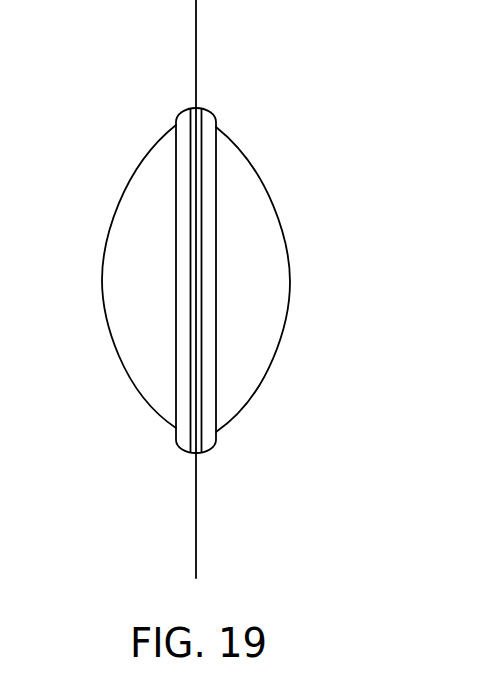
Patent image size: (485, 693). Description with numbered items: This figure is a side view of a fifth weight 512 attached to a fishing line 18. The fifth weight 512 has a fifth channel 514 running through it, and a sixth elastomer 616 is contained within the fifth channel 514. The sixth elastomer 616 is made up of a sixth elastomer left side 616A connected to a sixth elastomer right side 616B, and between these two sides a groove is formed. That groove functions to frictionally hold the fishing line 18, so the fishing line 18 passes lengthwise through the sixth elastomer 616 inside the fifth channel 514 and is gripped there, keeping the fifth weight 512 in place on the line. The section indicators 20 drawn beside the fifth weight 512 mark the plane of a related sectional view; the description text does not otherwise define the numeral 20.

The fishing line 18 is at (196, 26).
The fifth weight 512 is at (263, 173).
The fifth channel 514 is at (216, 278).
The sixth elastomer 616 is at (215, 117).
The sixth elastomer left side 616A is at (215, 443).
The sixth elastomer right side 616B is at (190, 452).
The section line 20 is at (93, 314).